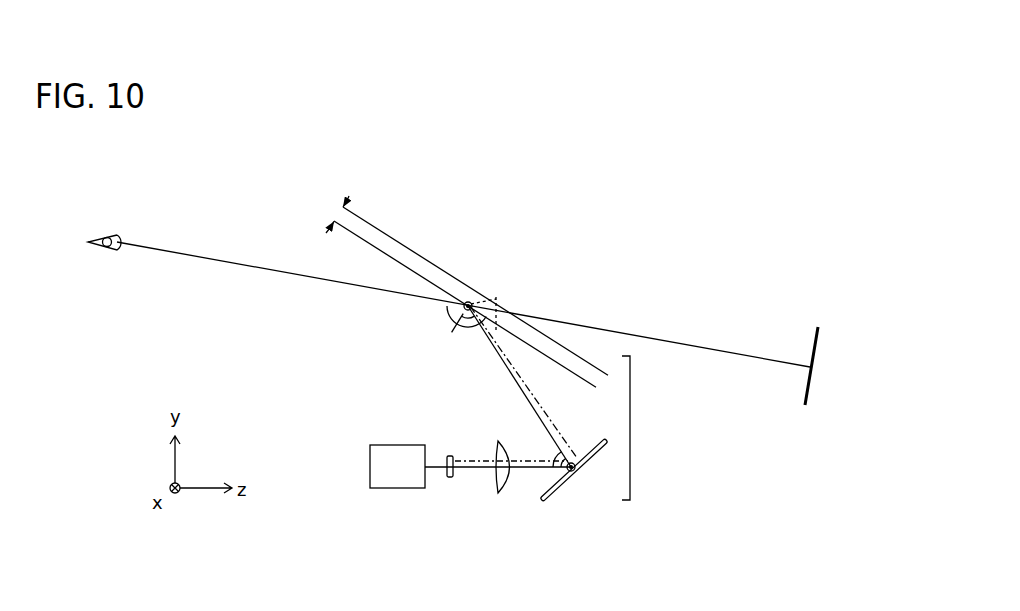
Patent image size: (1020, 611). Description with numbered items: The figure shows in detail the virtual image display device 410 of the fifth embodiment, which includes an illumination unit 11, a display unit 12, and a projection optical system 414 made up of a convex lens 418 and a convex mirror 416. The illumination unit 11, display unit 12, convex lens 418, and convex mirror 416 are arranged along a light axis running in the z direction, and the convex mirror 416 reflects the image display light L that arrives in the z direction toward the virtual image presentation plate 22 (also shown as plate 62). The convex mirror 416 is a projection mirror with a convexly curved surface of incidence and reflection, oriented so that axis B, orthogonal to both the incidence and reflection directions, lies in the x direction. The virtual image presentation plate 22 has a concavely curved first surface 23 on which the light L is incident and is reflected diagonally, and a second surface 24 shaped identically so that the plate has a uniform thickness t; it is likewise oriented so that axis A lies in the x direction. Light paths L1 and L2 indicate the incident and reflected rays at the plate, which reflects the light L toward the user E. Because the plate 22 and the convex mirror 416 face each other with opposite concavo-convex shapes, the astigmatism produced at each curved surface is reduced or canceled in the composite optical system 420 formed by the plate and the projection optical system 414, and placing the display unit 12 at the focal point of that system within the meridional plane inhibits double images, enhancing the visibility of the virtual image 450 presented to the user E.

The virtual image presentation plate 22 is at (460, 265).
The transparent plate (alternate embodiment) 62 is at (460, 265).
The first surface 23 is at (378, 250).
The second surface 24 is at (393, 236).
The virtual image 450 is at (824, 303).
The composite optical system 420 is at (586, 446).
The convex mirror 416 is at (558, 490).
The virtual image display device 410 is at (420, 464).
The projection optical system 414 is at (432, 464).
The illumination unit 11 is at (397, 490).
The display unit 12 is at (449, 478).
The convex lens 418 is at (497, 494).
The user E is at (100, 233).
The axis A is at (467, 301).
The axis B is at (575, 472).
The thickness t is at (338, 212).
The image display light L is at (551, 413).
The first light path L1 is at (520, 387).
The second light path L2 is at (528, 368).